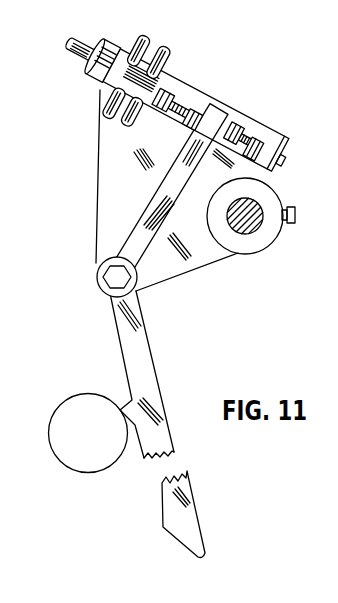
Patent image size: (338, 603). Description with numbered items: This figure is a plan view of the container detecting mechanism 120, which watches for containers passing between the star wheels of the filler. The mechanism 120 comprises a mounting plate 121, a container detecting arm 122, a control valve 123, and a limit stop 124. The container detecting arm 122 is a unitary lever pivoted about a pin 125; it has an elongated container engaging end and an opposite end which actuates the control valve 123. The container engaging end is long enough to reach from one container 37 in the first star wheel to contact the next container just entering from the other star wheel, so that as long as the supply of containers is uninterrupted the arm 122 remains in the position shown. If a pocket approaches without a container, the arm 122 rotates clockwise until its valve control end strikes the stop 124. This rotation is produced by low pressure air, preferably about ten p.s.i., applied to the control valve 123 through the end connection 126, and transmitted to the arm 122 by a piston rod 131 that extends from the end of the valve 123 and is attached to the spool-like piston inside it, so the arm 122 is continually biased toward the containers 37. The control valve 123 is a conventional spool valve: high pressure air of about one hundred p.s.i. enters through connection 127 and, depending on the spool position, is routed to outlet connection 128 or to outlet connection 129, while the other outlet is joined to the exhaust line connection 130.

The container 37 is at (73, 415).
The container detecting mechanism 120 is at (207, 268).
The mounting plate 121 is at (167, 270).
The container detecting arm 122 is at (137, 355).
The control valve 123 is at (160, 77).
The limit stop 124 is at (238, 122).
The pin 125 is at (113, 270).
The end connection 126 is at (72, 47).
The connection 127 is at (147, 40).
The outlet connection 128 is at (127, 130).
The outlet connection 129 is at (109, 118).
The exhaust line connection 130 is at (163, 50).
The piston rod 131 is at (190, 110).